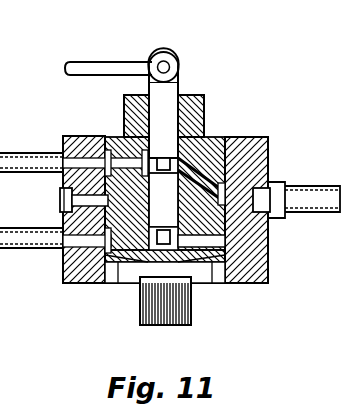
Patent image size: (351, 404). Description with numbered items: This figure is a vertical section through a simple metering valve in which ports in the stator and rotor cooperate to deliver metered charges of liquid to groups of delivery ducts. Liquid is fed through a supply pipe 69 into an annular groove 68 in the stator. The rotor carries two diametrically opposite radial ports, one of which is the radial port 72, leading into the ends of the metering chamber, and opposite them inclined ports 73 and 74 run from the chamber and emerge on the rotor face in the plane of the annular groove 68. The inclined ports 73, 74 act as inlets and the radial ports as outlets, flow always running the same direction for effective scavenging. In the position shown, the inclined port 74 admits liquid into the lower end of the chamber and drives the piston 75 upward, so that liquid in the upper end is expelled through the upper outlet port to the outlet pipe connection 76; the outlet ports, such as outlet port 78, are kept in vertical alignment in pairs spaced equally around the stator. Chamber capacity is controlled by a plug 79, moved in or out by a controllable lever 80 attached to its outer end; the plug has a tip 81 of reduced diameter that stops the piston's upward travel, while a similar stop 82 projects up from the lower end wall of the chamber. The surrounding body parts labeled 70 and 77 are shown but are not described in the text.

The annular groove 68 is at (60, 200).
The supply pipe 69 is at (303, 193).
The valve body 70 is at (112, 275).
The radial port 72 is at (215, 245).
The inclined port 73 is at (197, 177).
The inclined port 74 is at (142, 240).
The piston 75 is at (163, 211).
The outlet pipe connection 76 is at (21, 163).
The passage 77 is at (82, 160).
The outlet port 78 is at (70, 253).
The plug 79 is at (167, 103).
The controllable lever 80 is at (118, 68).
The tip 81 is at (167, 153).
The stop 82 is at (182, 248).